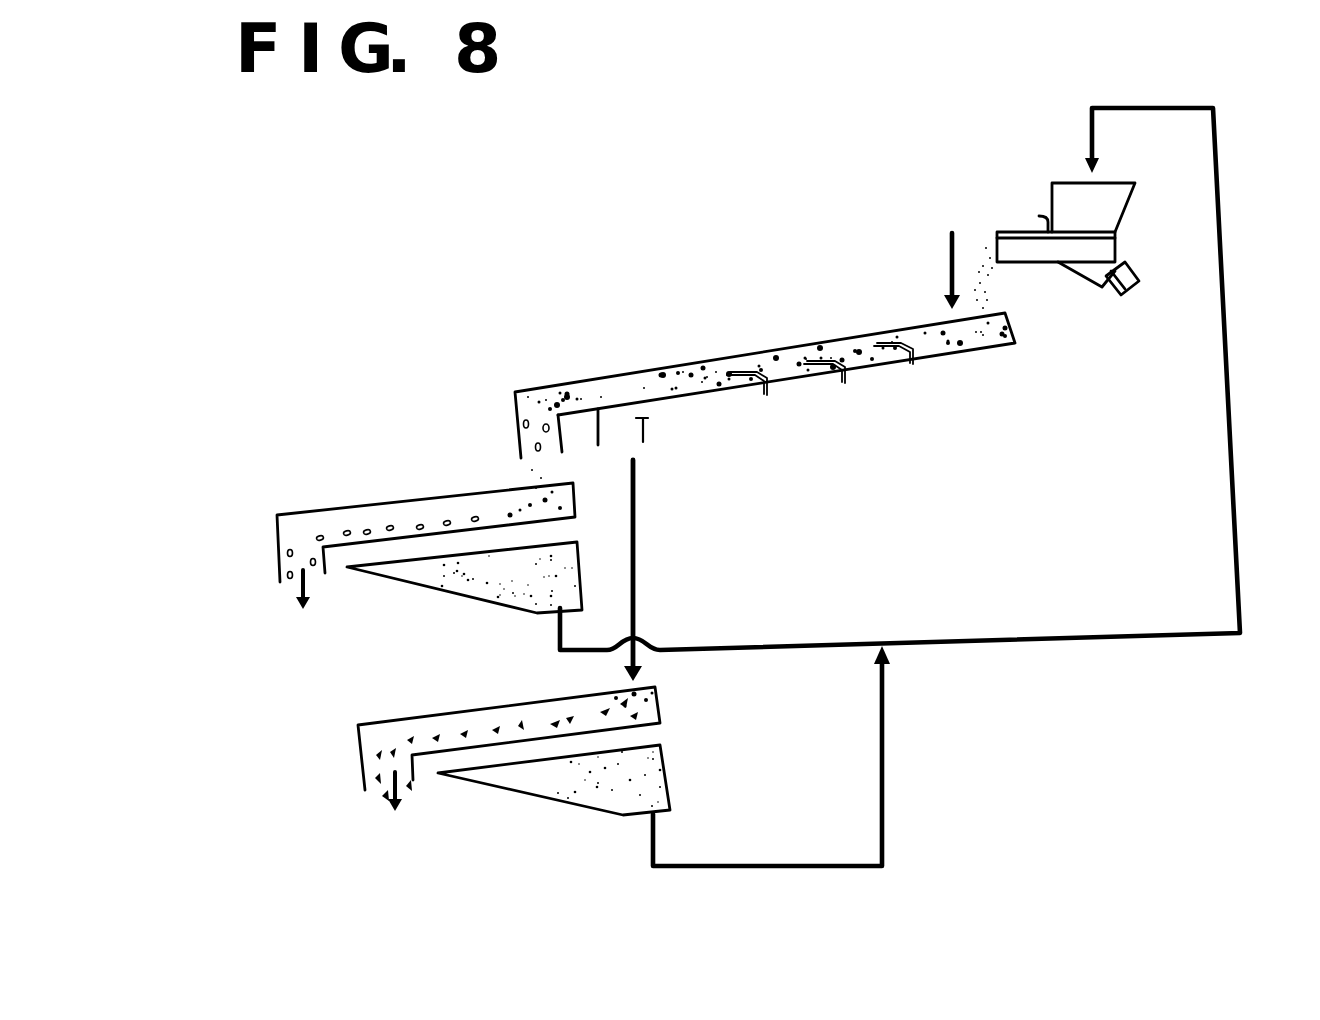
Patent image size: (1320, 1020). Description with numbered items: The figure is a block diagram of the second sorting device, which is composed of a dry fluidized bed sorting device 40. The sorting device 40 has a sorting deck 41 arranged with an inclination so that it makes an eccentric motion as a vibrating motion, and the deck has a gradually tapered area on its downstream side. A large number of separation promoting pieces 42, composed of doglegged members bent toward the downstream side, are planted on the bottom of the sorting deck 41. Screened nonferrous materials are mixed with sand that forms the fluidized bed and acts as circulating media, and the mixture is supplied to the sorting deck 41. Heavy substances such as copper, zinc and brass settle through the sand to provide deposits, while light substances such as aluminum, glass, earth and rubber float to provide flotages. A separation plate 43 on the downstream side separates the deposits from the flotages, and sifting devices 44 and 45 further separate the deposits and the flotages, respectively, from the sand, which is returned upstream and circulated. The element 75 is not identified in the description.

The dry fluidized bed sorting device 40 is at (835, 433).
The sorting deck 41 is at (897, 366).
The separation promoting pieces 42 is at (893, 343).
The separation plate 43 is at (627, 410).
The sifting device 44 is at (361, 442).
The sifting device 45 is at (436, 688).
The guide plate 75 is at (688, 402).